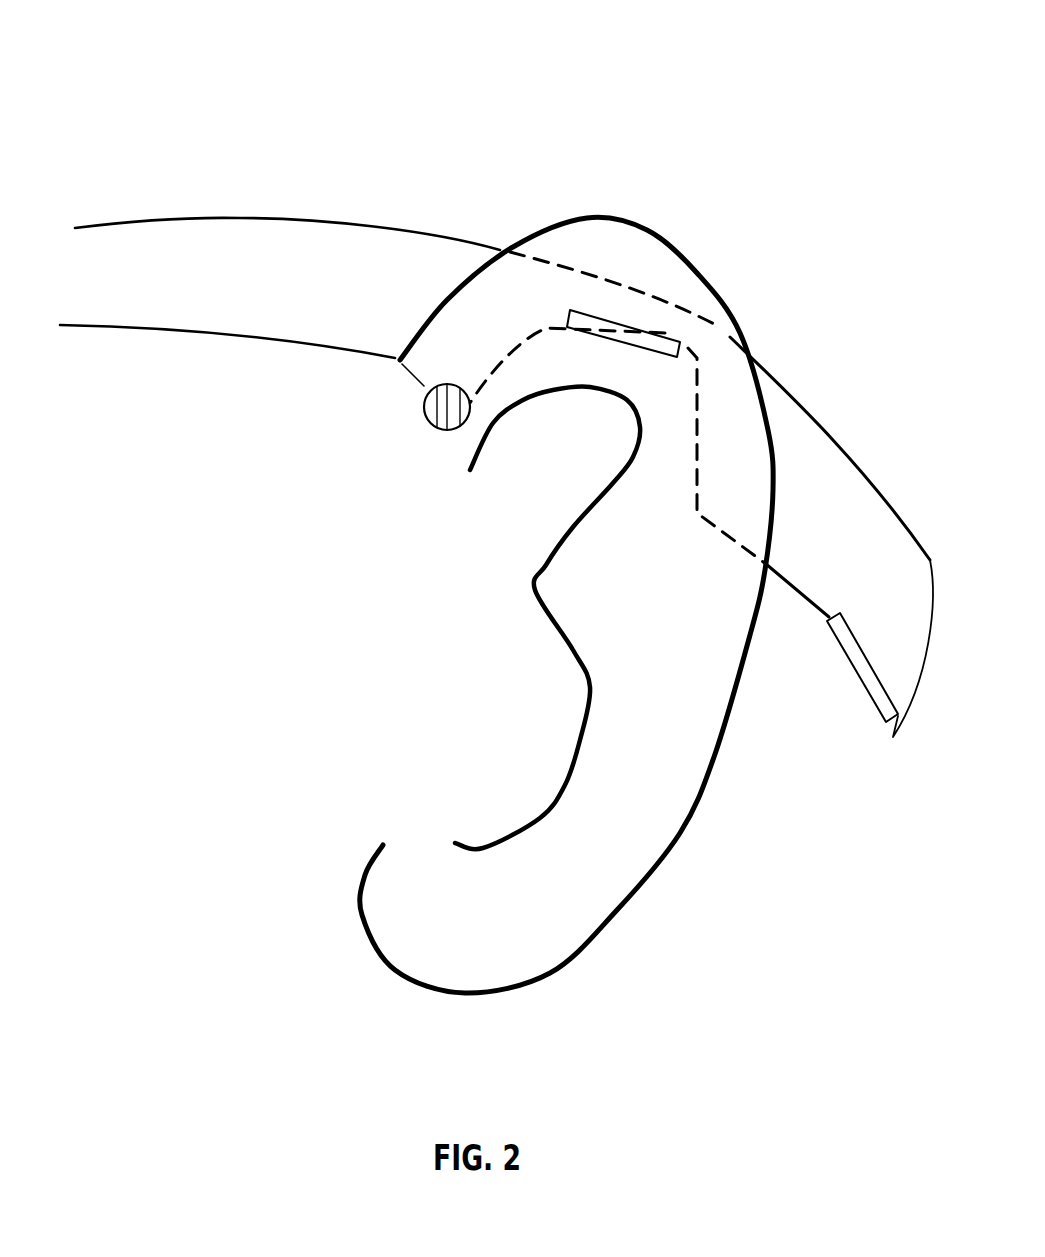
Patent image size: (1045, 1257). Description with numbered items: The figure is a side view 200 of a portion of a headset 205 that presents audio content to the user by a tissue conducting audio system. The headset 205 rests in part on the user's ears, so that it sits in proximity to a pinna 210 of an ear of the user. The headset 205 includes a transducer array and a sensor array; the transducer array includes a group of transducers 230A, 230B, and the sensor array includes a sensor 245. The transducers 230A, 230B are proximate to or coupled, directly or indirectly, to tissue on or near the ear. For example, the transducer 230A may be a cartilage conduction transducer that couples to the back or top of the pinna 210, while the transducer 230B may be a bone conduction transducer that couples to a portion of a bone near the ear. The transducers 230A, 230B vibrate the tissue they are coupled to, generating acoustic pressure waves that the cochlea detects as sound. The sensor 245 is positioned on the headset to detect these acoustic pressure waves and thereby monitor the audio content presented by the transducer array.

The side view 200 is at (489, 498).
The headset 205 is at (107, 303).
The pinna 210 is at (619, 218).
The transducer 230A is at (680, 341).
The transducer 230B is at (869, 675).
The sensor 245 is at (421, 426).